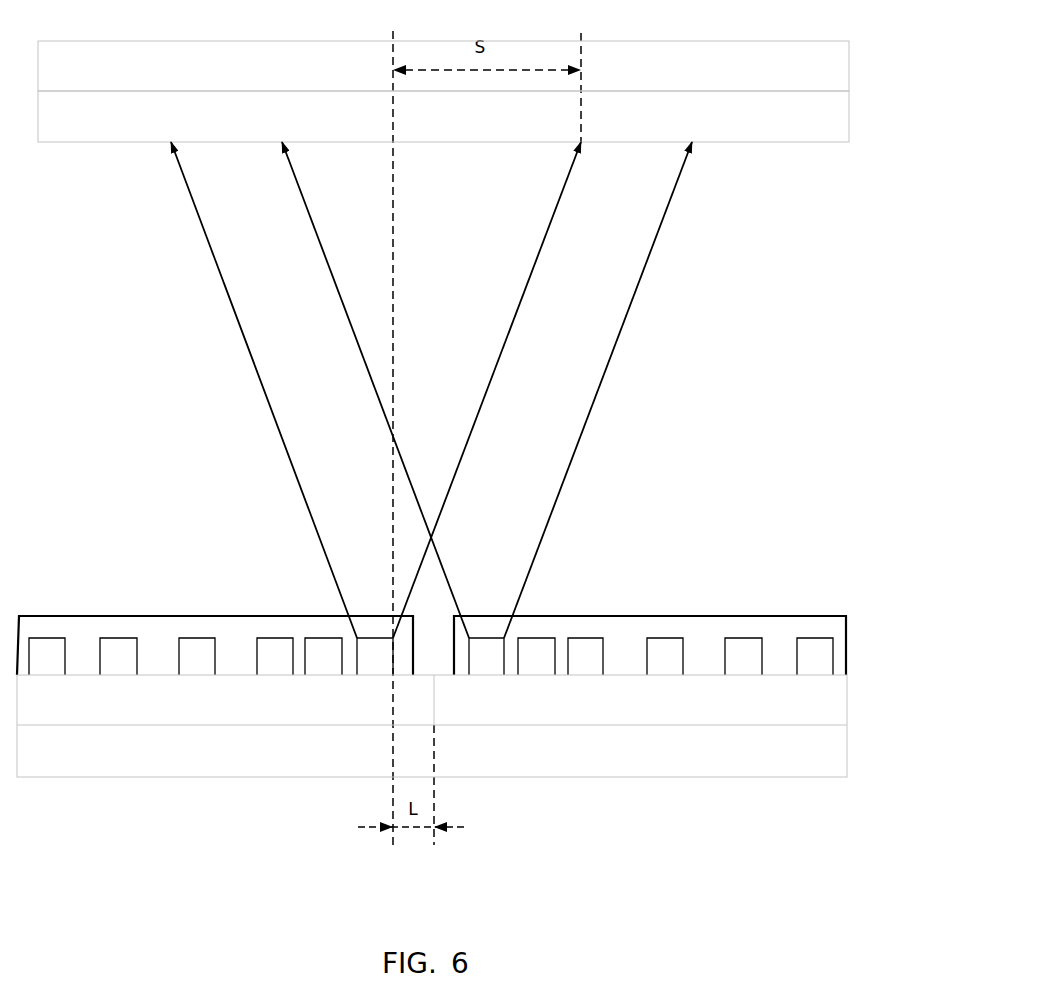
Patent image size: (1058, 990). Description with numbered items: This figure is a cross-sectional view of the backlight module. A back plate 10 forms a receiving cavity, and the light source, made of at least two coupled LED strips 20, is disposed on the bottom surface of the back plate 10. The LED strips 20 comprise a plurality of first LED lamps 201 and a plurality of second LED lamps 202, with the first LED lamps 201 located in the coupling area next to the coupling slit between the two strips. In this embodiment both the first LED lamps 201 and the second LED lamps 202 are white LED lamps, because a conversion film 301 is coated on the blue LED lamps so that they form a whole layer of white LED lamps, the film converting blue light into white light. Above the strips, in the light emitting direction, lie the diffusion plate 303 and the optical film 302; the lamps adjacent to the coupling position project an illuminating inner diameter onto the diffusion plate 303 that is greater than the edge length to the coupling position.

The back plate 10 is at (474, 726).
The LED strips 20 is at (473, 640).
The first LED lamps 201 is at (480, 608).
The second LED lamps 202 is at (813, 654).
The conversion film 301 is at (739, 553).
The optical film 302 is at (479, 66).
The diffusion plate 303 is at (479, 116).